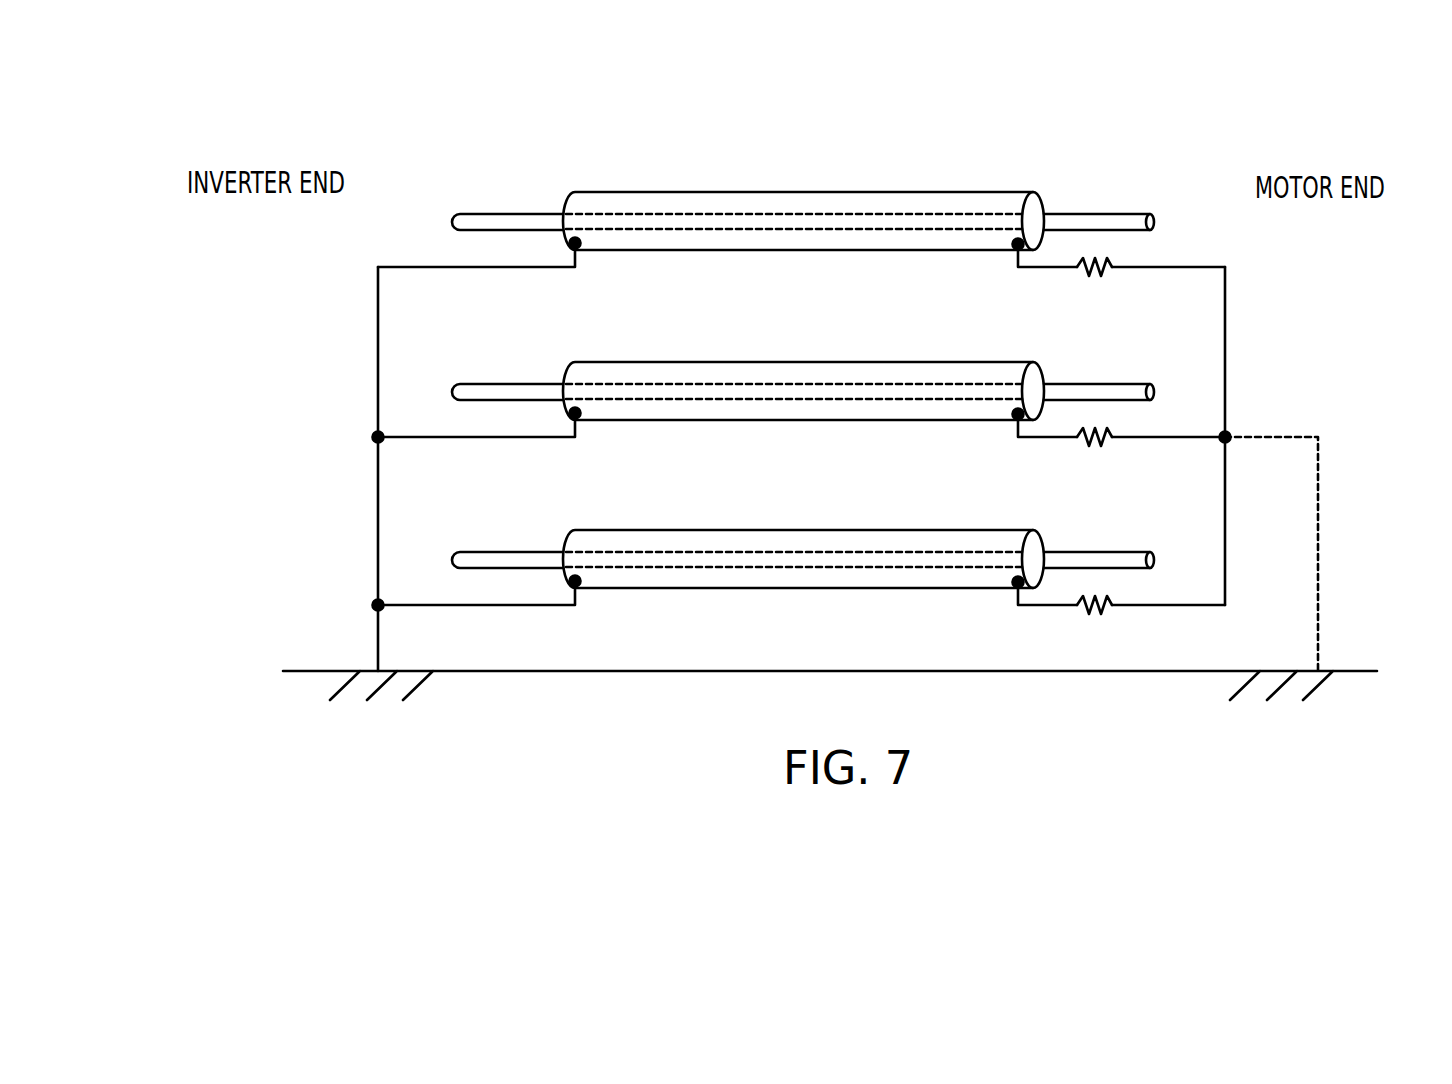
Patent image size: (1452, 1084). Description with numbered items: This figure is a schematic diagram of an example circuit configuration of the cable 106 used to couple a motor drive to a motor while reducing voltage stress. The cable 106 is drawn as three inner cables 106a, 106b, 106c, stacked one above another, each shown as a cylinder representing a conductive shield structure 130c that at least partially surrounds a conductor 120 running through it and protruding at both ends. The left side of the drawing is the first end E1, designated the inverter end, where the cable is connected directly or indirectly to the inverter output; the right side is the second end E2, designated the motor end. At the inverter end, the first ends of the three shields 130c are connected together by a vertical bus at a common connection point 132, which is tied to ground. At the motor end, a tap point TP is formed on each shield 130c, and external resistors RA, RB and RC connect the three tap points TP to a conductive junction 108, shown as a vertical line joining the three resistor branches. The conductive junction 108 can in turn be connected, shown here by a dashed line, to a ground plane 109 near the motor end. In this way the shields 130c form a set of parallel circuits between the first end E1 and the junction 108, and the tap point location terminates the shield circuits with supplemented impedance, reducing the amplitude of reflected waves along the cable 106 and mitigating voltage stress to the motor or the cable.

The cable 106 is at (656, 82).
The inner cable 106a is at (573, 181).
The inner cable 106b is at (770, 367).
The inner cable 106c is at (770, 535).
The conductive shield structure 130c is at (717, 192).
The conductor 120 is at (470, 214).
The tap point TP is at (1010, 262).
The external resistor RA is at (1094, 252).
The external resistor RB is at (1094, 422).
The external resistor RC is at (1094, 590).
The conductive junction 108 is at (1226, 413).
The ground plane 109 is at (1320, 478).
The common connection point 132 is at (378, 556).
The first end E1 is at (318, 229).
The second end E2 is at (1288, 232).